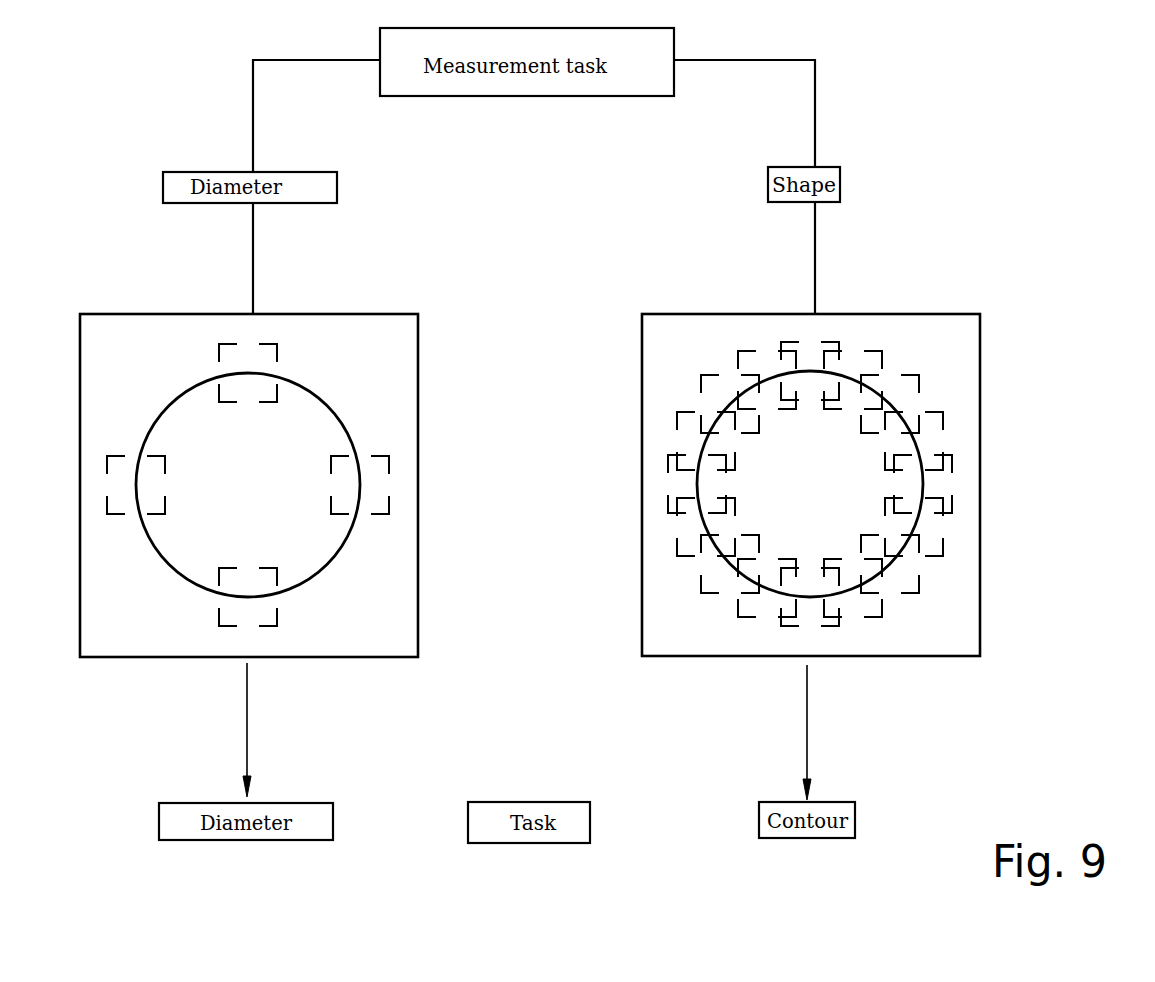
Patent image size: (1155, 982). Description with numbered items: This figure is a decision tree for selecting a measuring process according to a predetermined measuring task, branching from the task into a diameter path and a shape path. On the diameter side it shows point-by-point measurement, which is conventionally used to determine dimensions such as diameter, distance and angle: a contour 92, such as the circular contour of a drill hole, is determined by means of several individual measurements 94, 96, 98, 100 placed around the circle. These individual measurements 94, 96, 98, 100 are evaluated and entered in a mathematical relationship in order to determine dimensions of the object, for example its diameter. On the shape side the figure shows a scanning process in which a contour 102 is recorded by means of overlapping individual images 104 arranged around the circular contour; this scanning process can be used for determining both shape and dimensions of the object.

The contour 92 is at (318, 394).
The individual measurement 94 is at (373, 500).
The individual measurement 96 is at (264, 623).
The individual measurement 98 is at (127, 504).
The individual measurement 100 is at (233, 349).
The contour 102 is at (876, 392).
The overlapping individual images 104 is at (940, 428).